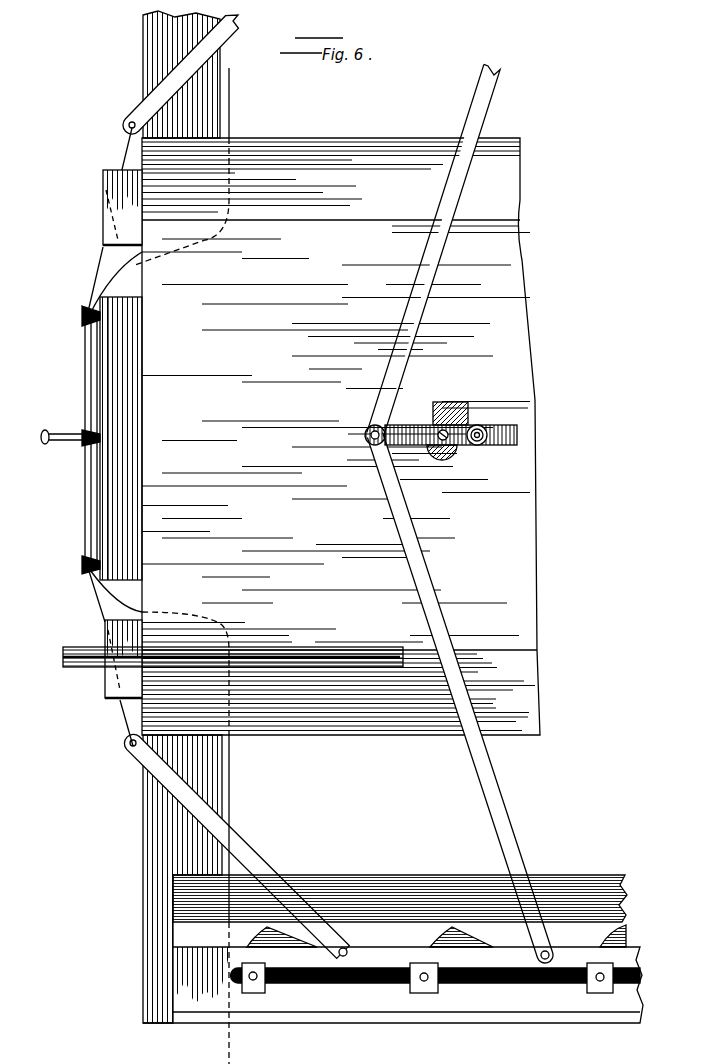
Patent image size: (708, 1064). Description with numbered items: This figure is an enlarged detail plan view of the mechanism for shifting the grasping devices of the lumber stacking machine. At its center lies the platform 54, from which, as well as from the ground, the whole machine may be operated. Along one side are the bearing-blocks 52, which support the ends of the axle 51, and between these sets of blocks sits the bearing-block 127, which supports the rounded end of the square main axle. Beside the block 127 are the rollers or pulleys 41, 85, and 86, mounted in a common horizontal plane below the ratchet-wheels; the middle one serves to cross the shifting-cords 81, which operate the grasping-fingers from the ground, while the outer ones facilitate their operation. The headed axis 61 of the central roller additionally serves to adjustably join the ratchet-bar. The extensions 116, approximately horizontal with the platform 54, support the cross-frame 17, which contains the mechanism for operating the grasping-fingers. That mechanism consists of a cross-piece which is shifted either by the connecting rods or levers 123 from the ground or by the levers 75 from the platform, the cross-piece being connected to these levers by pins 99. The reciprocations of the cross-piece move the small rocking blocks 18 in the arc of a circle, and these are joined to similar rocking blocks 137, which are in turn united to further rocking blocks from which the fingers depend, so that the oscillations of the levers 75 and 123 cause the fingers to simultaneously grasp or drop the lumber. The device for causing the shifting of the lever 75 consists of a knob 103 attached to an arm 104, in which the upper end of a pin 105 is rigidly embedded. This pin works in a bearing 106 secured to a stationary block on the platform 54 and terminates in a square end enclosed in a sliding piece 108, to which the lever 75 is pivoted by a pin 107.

The platform 54 is at (341, 436).
The extensions 116 is at (184, 517).
The connecting rods 123 is at (234, 486).
The shifting-cords 81 is at (229, 112).
The bearing-blocks 52 is at (122, 434).
The bearing-blocks 127 is at (113, 434).
The roller or pulley 41 is at (83, 318).
The roller or pulley 85 is at (83, 566).
The roller or pulley 86 is at (80, 432).
The headed axis 61 is at (41, 437).
The axle 51 is at (275, 652).
The levers 75 is at (460, 513).
The pin 107 is at (368, 426).
The arm 104 is at (505, 445).
The sliding piece 108 is at (403, 425).
The bearing 106 is at (450, 404).
The pin 105 is at (460, 450).
The knob 103 is at (484, 428).
The cross-frame 17 is at (393, 949).
The rocking blocks 137 is at (600, 934).
The small rocking blocks 18 is at (265, 988).
The pins 99 is at (348, 953).